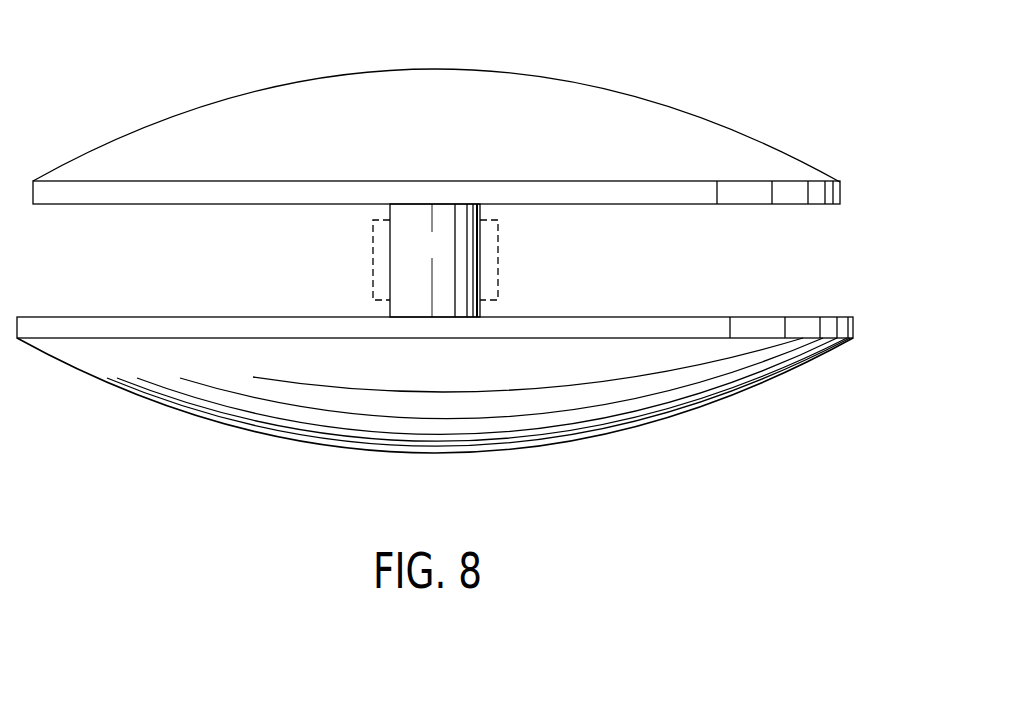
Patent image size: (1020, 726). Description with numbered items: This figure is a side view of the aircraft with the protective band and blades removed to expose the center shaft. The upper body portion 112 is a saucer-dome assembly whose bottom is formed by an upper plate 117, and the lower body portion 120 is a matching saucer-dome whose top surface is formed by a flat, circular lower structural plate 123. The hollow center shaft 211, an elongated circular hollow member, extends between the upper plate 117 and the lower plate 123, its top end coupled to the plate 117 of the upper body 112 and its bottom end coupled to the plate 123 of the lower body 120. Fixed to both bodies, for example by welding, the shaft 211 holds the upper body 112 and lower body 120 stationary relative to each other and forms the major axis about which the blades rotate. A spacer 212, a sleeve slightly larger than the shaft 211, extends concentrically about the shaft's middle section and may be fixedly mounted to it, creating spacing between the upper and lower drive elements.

The upper body portion 112 is at (604, 84).
The upper plate 117 is at (221, 205).
The hollow center shaft 211 is at (435, 252).
The spacer 212 is at (372, 265).
The lower structural plate 123 is at (632, 316).
The lower body portion 120 is at (642, 432).